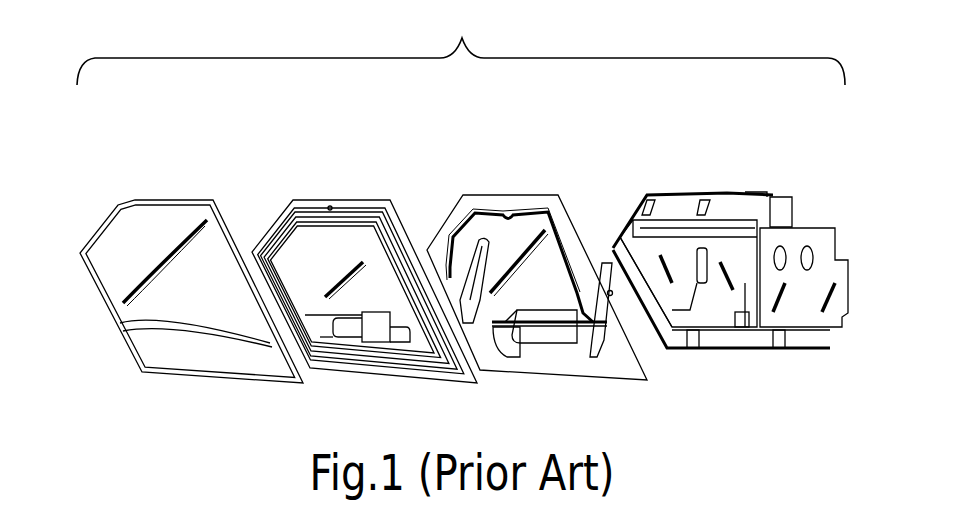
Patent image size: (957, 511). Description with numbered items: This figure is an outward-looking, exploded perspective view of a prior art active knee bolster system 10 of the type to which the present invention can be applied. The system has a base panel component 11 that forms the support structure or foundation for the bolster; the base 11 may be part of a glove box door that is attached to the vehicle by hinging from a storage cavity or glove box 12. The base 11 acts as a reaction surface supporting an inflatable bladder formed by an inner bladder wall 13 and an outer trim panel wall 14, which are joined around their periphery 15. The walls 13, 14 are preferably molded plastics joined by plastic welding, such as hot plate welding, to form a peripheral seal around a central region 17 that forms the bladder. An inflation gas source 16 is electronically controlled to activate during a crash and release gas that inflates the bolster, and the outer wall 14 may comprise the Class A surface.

The active knee bolster system 10 is at (462, 38).
The base panel component 11 is at (490, 195).
The glove box 12 is at (680, 195).
The inner wall 13 is at (300, 196).
The outer wall 14 is at (171, 195).
The periphery 15 is at (362, 200).
The inflation gas source 16 is at (373, 332).
The central region 17 is at (358, 250).